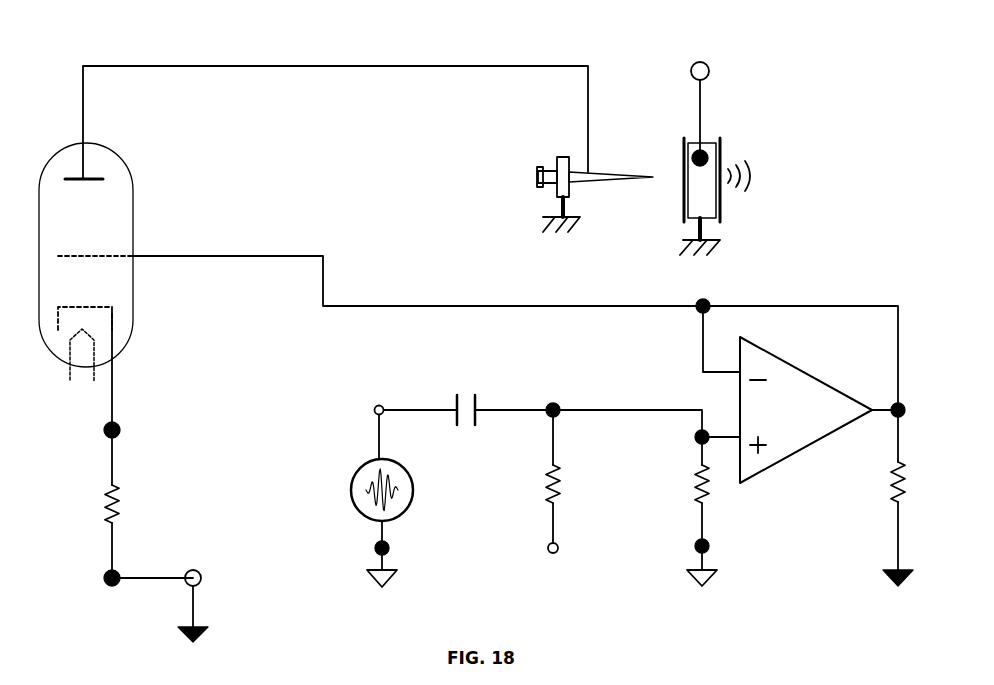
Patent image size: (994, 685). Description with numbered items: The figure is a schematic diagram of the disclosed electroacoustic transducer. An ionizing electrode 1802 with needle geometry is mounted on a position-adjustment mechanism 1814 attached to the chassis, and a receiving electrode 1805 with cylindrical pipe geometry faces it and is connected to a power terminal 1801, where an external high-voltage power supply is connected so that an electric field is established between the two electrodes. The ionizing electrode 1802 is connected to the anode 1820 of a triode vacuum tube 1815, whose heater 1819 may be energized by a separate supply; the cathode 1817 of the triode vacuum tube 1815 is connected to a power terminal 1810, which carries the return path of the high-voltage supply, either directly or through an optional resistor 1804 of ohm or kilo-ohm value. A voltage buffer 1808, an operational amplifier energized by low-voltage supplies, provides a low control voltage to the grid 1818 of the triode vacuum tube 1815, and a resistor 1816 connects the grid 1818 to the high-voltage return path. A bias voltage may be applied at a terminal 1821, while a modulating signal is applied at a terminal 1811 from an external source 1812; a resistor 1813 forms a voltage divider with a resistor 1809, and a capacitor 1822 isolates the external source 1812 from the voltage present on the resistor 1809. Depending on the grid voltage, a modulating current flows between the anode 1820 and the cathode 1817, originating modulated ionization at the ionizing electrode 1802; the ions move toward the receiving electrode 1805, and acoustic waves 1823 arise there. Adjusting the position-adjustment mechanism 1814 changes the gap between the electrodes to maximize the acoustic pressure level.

The power terminal 1801 is at (709, 77).
The ionizing electrode 1802 is at (600, 181).
The resistor 1804 is at (120, 487).
The receiving electrode 1805 is at (705, 215).
The voltage buffer 1808 is at (752, 477).
The resistor 1809 is at (694, 471).
The power terminal 1810 is at (203, 576).
The terminal 1811 is at (375, 408).
The external source 1812 is at (352, 488).
The resistor 1813 is at (547, 472).
The position-adjustment mechanism 1814 is at (555, 188).
The triode vacuum tube 1815 is at (133, 190).
The resistor 1816 is at (888, 488).
The cathode 1817 is at (87, 307).
The grid 1818 is at (98, 250).
The heater 1819 is at (92, 368).
The anode 1820 is at (88, 178).
The terminal 1821 is at (560, 552).
The capacitor 1822 is at (479, 393).
The acoustic waves 1823 is at (755, 180).